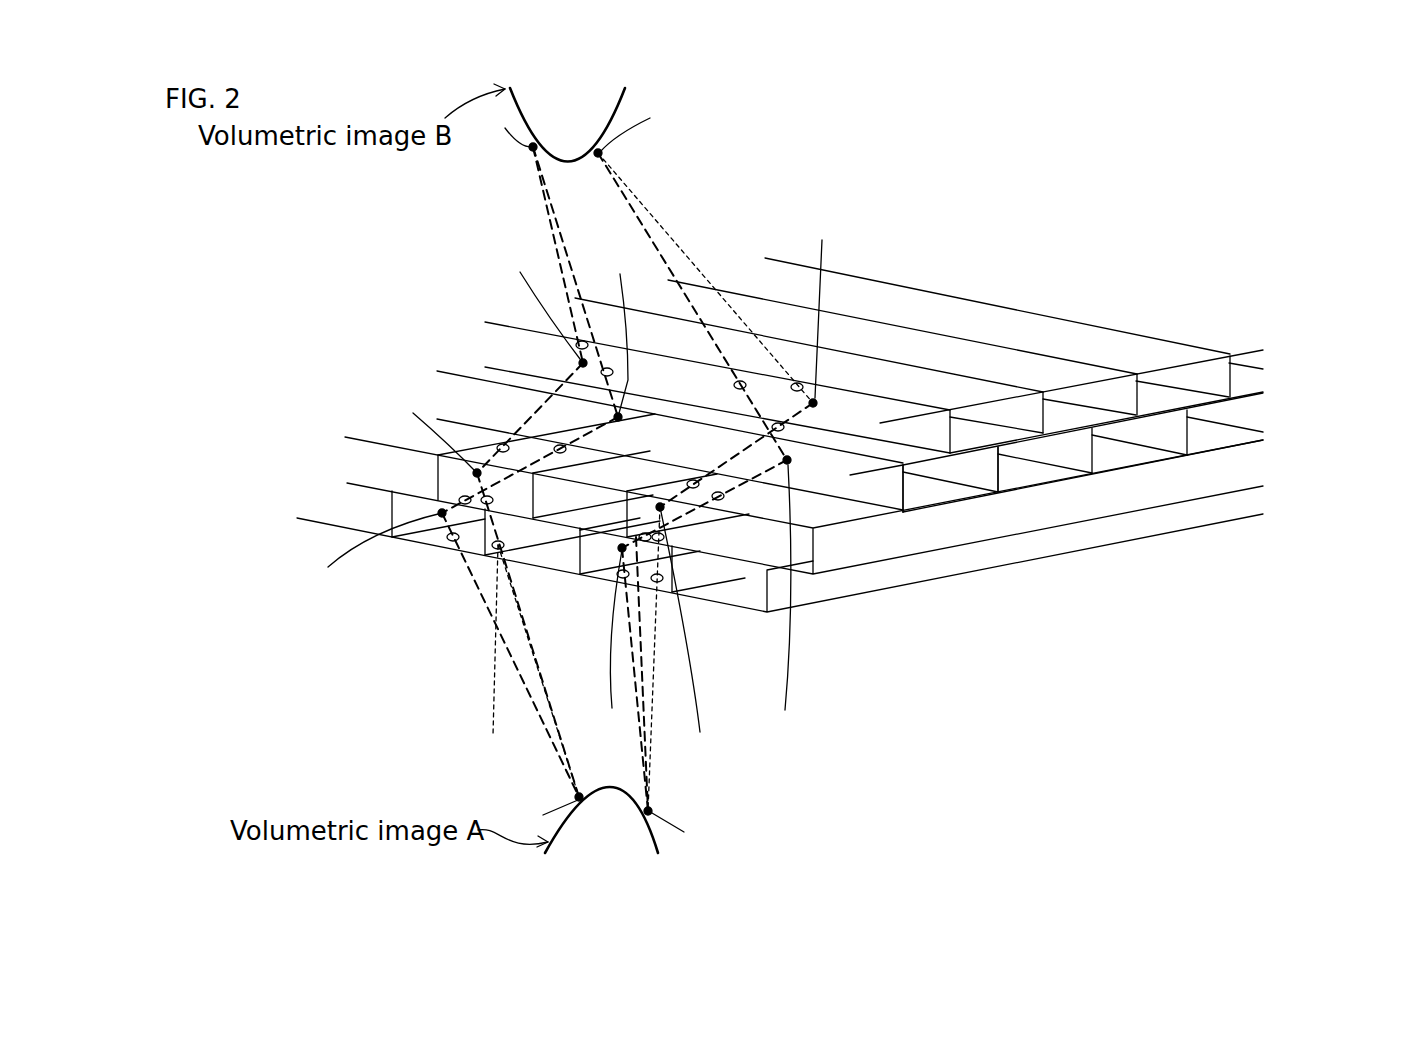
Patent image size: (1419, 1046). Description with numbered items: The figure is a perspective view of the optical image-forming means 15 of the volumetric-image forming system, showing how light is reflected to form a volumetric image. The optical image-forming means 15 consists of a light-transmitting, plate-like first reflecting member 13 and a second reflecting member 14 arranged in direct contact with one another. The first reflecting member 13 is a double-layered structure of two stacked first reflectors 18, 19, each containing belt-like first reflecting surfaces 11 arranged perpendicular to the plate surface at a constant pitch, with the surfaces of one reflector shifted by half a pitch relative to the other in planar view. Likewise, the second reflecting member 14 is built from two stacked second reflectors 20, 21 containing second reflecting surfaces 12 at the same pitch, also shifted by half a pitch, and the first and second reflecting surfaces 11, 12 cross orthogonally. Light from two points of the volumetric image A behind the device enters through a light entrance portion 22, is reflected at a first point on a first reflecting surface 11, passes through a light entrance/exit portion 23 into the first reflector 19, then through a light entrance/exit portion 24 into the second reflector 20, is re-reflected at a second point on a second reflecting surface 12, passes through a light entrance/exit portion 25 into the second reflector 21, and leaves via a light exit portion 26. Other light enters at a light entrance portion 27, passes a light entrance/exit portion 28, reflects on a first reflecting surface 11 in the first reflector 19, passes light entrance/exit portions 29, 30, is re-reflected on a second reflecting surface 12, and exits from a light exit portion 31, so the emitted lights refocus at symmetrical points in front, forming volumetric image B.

The first reflecting surface 11 is at (450, 470).
The second reflecting surface 12 is at (880, 487).
The first reflecting member 13 is at (905, 735).
The second reflecting member 14 is at (1328, 355).
The optical image-forming means 15 is at (1063, 178).
The first reflector 18 is at (818, 607).
The first reflector 19 is at (883, 567).
The second reflector 20 is at (1255, 421).
The second reflector 21 is at (1253, 371).
The light entrance portion 22 is at (462, 560).
The light entrance/exit portion 23 is at (567, 587).
The light entrance/exit portion 24 is at (570, 375).
The light entrance/exit portion 25 is at (570, 340).
The light exit portion 26 is at (607, 368).
The light entrance portion 27 is at (660, 548).
The light entrance/exit portion 28 is at (652, 540).
The light entrance/exit portion 29 is at (503, 442).
The light entrance/exit portion 30 is at (578, 343).
The light exit portion 31 is at (560, 337).